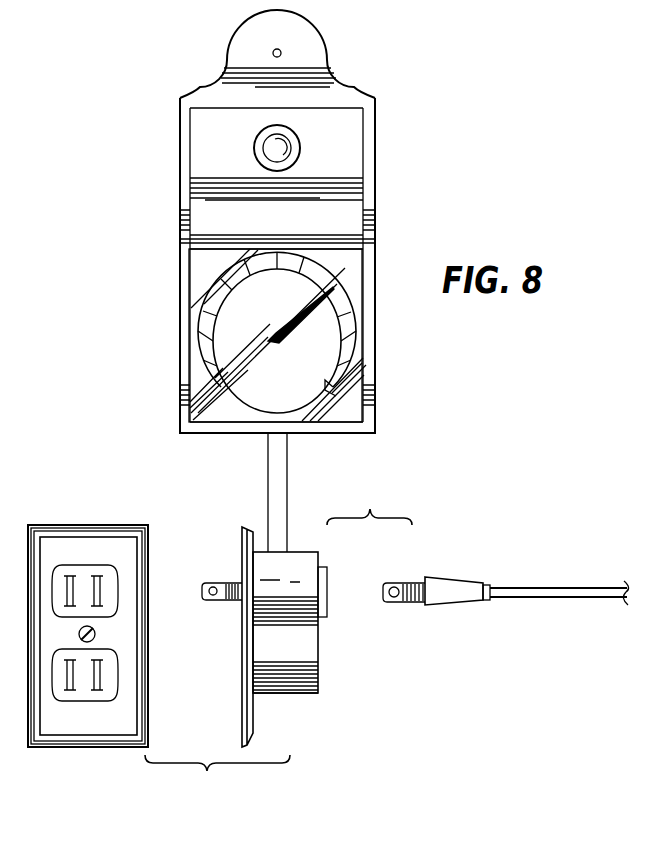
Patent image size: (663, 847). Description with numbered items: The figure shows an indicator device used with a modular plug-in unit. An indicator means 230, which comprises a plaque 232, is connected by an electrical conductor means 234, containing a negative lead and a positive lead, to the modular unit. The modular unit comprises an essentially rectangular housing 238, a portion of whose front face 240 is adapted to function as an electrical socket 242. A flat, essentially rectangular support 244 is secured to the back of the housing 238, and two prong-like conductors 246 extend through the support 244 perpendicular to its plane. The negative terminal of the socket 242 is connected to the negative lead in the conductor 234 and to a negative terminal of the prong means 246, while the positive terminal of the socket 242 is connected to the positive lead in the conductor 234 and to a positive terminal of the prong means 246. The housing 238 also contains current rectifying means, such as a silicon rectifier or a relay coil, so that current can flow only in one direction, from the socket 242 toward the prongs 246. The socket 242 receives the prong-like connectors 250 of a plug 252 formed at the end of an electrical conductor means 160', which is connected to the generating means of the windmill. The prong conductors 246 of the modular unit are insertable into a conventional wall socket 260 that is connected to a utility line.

The indicator means 230 is at (380, 203).
The plaque 232 is at (330, 59).
The electrical conductor means 234 is at (288, 499).
The housing 238 is at (318, 690).
The front face 240 is at (307, 650).
The electrical socket 242 is at (327, 577).
The support 244 is at (245, 683).
The prong-like conductors 246 is at (220, 583).
The prong-like connectors 250 is at (402, 583).
The plug 252 is at (458, 590).
The wall socket 260 is at (167, 518).
The electrical conductor means 160' is at (568, 575).